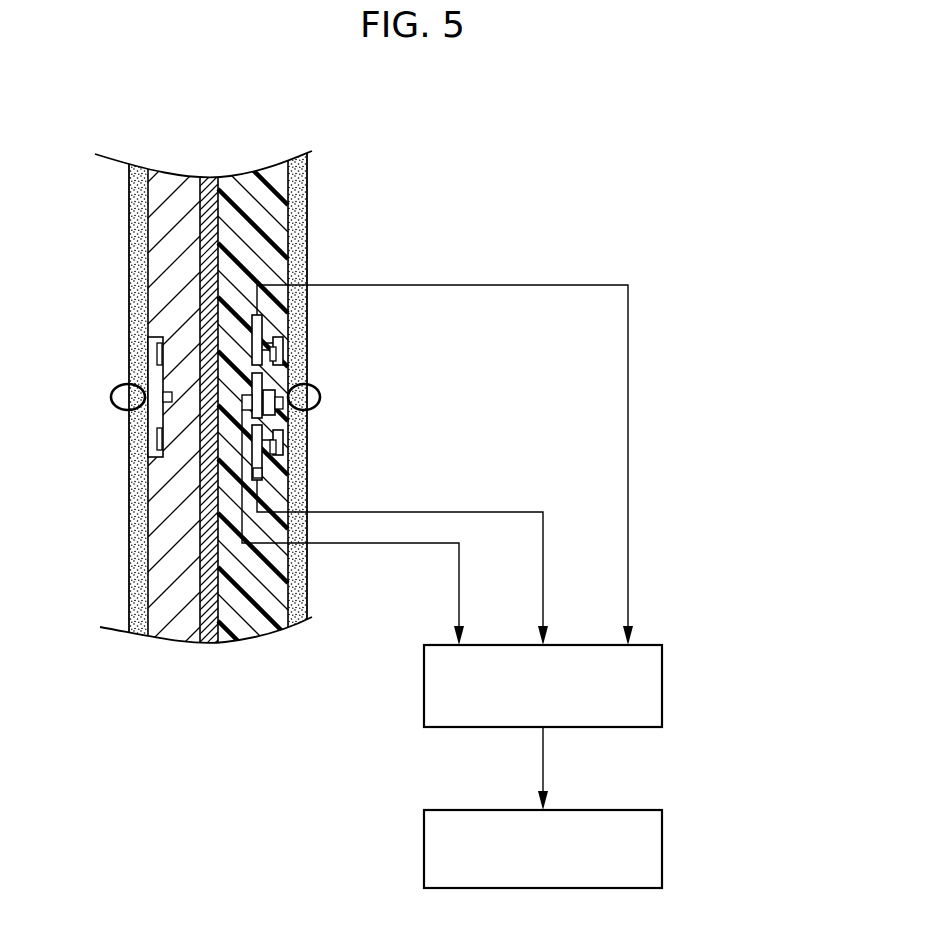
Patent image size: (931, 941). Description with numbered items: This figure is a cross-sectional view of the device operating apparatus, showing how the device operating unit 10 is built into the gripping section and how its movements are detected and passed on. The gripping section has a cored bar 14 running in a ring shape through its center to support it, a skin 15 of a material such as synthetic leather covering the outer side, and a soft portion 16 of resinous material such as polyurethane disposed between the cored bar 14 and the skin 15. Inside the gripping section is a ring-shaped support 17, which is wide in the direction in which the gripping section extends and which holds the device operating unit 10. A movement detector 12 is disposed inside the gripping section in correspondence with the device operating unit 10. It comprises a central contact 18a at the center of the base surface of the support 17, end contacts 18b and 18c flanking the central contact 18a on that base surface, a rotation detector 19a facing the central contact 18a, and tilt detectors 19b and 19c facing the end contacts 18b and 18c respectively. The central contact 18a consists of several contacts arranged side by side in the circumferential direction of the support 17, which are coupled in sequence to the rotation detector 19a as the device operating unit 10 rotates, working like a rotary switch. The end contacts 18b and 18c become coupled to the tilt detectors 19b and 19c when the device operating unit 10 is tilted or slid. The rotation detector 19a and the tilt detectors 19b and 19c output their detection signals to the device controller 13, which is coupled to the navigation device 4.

The navigation device 4 is at (662, 838).
The device operating unit 10 is at (320, 392).
The movement detector 12 is at (250, 268).
The device controller 13 is at (662, 672).
The cored bar 14 is at (215, 177).
The skin 15 is at (307, 194).
The soft portion 16 is at (270, 186).
The support 17 is at (307, 304).
The central contact 18a is at (307, 425).
The end contact 18b is at (307, 348).
The end contact 18c is at (307, 452).
The rotation detector 19a is at (252, 386).
The tilt detector 19b is at (258, 315).
The tilt detector 19c is at (307, 480).